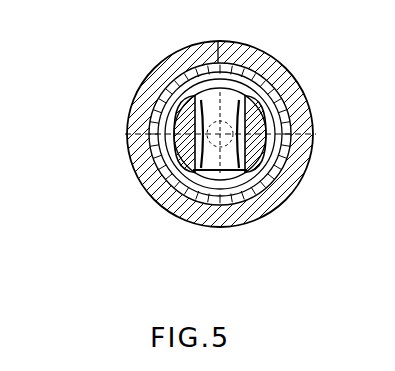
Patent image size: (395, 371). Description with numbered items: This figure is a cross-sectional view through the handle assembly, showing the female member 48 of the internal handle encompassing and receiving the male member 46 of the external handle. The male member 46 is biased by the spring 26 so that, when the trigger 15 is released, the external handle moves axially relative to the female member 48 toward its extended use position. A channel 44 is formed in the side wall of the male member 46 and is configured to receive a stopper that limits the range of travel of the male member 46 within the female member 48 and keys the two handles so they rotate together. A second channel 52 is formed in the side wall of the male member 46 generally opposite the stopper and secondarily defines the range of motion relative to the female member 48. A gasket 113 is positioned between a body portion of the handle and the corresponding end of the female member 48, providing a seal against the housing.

The female member 48 is at (127, 153).
The gasket 113 is at (157, 103).
The channel 44 is at (228, 172).
The male member 46 is at (178, 162).
The spring 26 is at (215, 155).
The second channel 52 is at (228, 98).
The trigger 15 is at (389, 179).